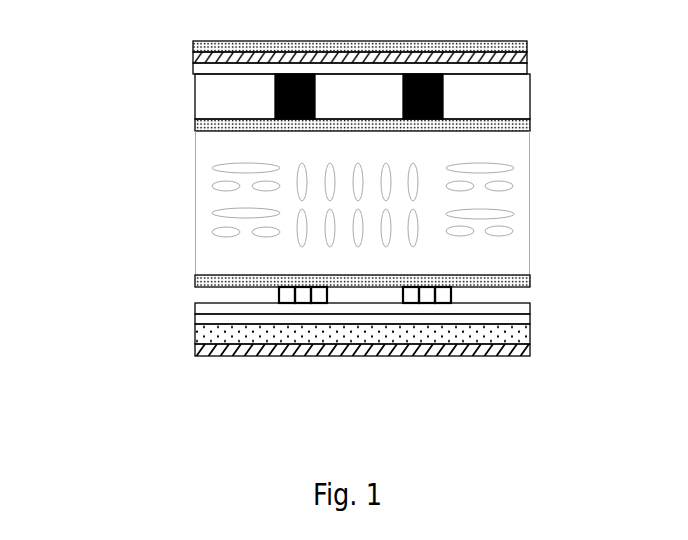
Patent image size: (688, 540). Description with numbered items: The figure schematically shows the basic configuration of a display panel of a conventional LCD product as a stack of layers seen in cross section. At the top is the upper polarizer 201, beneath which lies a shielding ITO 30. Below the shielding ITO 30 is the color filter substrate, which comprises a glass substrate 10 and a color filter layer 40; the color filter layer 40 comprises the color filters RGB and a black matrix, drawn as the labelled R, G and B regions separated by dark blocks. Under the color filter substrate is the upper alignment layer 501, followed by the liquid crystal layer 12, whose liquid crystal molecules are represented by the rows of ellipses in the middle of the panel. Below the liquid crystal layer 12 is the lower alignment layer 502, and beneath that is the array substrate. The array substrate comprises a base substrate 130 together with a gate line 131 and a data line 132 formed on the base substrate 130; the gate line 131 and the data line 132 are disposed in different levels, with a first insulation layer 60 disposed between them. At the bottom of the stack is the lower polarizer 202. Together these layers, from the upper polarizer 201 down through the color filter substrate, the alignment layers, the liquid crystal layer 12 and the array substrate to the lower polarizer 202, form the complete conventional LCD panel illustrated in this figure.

The upper polarizer 201 is at (398, 46).
The glass substrate 10 is at (498, 72).
The shielding ITO 30 is at (196, 66).
The color filter layer 40 is at (507, 97).
The upper alignment layer 501 is at (196, 128).
The liquid crystal layer 12 is at (482, 211).
The lower alignment layer 502 is at (196, 277).
The data line 132 is at (450, 295).
The first insulation layer 60 is at (430, 311).
The gate line 131 is at (196, 318).
The base substrate 130 is at (440, 335).
The lower polarizer 202 is at (424, 355).